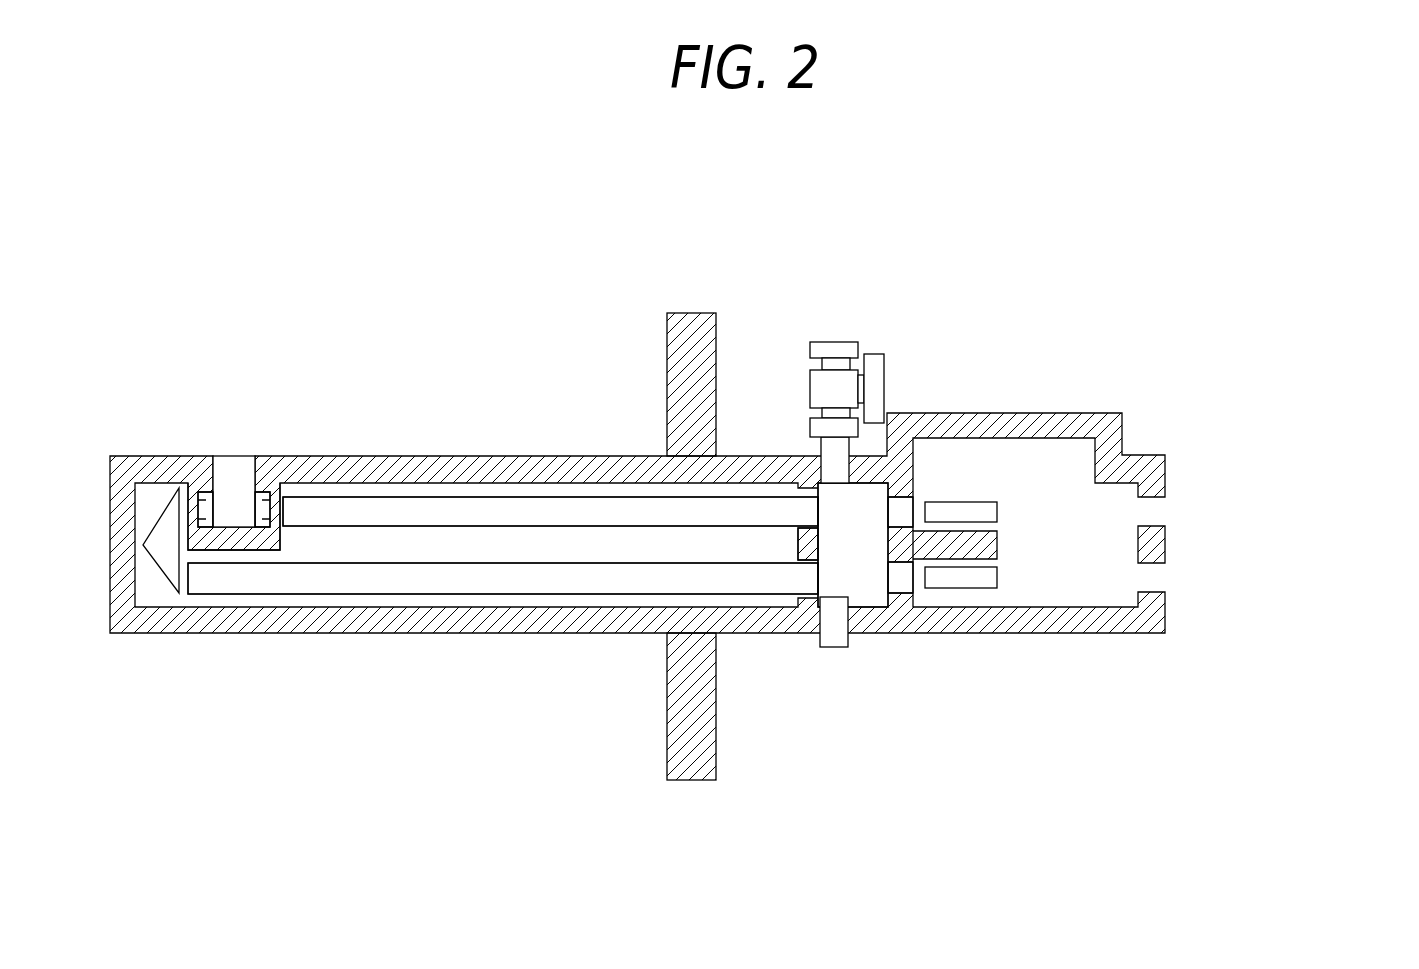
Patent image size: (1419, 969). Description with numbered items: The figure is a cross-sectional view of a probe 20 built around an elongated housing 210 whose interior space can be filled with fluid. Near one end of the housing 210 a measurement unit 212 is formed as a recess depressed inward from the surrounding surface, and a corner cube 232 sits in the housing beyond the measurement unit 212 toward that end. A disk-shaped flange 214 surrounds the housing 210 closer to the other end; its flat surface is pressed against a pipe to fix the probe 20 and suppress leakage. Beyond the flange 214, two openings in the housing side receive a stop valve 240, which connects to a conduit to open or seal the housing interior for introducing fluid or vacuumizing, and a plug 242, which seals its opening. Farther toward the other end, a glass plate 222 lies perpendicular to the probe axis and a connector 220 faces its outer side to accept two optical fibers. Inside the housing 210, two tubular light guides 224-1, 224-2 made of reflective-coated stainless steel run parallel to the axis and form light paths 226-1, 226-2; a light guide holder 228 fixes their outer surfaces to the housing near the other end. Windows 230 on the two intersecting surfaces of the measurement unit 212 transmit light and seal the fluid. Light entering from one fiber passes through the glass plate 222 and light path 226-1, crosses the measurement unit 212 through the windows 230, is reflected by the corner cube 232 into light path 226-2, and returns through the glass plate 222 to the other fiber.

The probe 20 is at (200, 263).
The housing 210 is at (1020, 620).
The measurement unit 212 is at (235, 503).
The flange 214 is at (680, 372).
The connector 220 is at (997, 578).
The glass plate 222 is at (910, 578).
The light guide 224-1 is at (400, 497).
The light guide 224-2 is at (427, 595).
The light path 226-1 is at (485, 508).
The light path 226-2 is at (500, 578).
The light guide holder 228 is at (798, 487).
The window 230 is at (267, 500).
The corner cube 232 is at (158, 568).
The stop valve 240 is at (833, 342).
The plug 242 is at (840, 647).